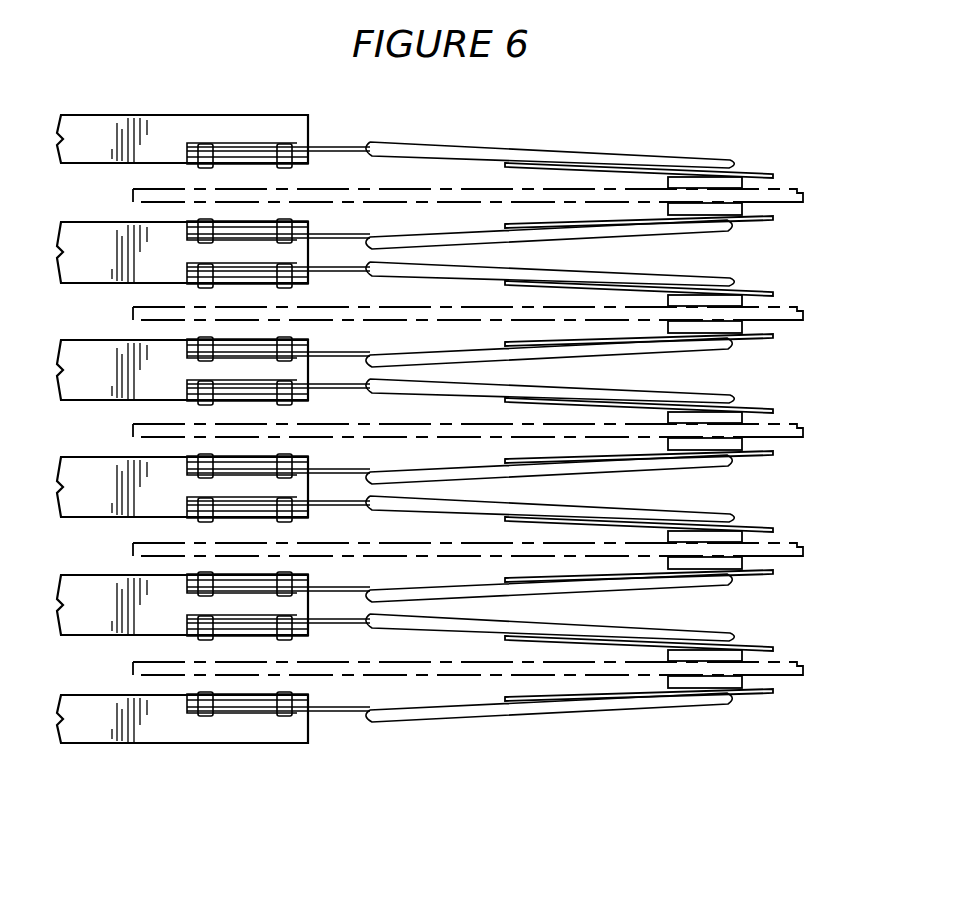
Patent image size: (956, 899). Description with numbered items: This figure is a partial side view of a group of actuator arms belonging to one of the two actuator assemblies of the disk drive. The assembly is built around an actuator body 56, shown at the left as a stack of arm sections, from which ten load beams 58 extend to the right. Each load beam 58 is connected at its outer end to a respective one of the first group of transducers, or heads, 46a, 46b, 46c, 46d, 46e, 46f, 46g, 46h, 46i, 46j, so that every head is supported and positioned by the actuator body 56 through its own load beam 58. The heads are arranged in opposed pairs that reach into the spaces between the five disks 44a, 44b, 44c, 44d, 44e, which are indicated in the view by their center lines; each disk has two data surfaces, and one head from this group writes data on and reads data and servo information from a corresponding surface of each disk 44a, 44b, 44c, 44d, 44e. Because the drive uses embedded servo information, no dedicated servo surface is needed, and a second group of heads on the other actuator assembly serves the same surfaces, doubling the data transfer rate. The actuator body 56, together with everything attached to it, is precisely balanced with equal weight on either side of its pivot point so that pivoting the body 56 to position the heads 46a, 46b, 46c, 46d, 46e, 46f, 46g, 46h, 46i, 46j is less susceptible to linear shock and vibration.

The disk 44a is at (133, 196).
The disk 44b is at (133, 314).
The disk 44c is at (133, 431).
The disk 44d is at (133, 550).
The disk 44e is at (133, 669).
The transducer 46a is at (721, 183).
The transducer 46b is at (721, 208).
The transducer 46c is at (721, 300).
The transducer 46d is at (721, 326).
The transducer 46e is at (721, 417).
The transducer 46f is at (721, 443).
The transducer 46g is at (721, 536).
The transducer 46h is at (721, 562).
The transducer 46i is at (721, 655).
The transducer 46j is at (721, 681).
The actuator body 56 is at (211, 130).
The load beam 58 is at (474, 150).